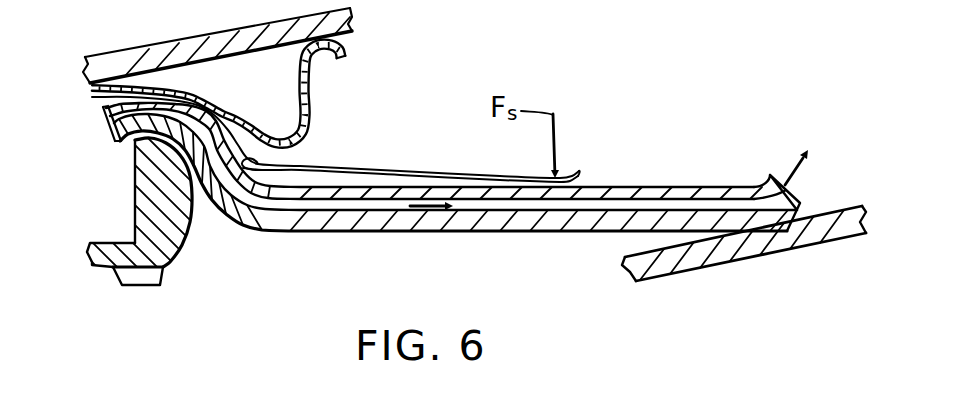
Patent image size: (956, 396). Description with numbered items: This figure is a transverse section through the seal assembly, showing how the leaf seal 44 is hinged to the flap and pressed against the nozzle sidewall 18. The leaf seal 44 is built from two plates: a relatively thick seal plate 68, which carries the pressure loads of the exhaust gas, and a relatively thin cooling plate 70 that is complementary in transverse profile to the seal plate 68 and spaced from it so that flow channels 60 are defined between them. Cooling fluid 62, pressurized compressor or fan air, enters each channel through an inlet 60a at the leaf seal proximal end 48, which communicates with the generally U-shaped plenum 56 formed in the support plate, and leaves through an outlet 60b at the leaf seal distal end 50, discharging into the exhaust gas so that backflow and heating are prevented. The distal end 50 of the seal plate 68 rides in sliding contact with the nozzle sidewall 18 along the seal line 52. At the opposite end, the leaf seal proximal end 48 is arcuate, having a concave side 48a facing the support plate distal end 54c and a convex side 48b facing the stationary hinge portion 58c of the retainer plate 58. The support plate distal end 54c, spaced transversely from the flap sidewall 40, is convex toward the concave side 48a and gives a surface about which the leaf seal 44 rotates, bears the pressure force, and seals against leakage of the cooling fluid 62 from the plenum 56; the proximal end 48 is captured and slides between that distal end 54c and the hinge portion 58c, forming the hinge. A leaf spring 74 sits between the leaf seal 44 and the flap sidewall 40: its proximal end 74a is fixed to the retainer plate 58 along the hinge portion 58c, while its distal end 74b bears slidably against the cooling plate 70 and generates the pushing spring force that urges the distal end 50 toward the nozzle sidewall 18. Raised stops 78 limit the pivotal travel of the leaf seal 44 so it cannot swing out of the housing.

The nozzle sidewall 18 is at (846, 238).
The flap sidewall 40 is at (357, 17).
The leaf seal 44 is at (612, 172).
The leaf seal proximal end 48 is at (113, 150).
The concave side 48a is at (134, 180).
The convex side 48b is at (130, 100).
The leaf seal distal end 50 is at (811, 238).
The seal line 52 is at (777, 246).
The support plate distal end 54c is at (180, 246).
The plenum 56 is at (117, 236).
The retainer plate 58 is at (322, 96).
The hinge portion 58c is at (198, 93).
The flow channels 60 is at (513, 181).
The inlet 60a is at (100, 128).
The outlet 60b is at (787, 188).
The cooling fluid 62 is at (91, 126).
The seal plate 68 is at (412, 233).
The cooling plate 70 is at (418, 178).
The leaf spring 74 is at (362, 166).
The leaf spring proximal end 74a is at (281, 167).
The leaf spring distal end 74b is at (567, 173).
The stops 78 is at (138, 281).